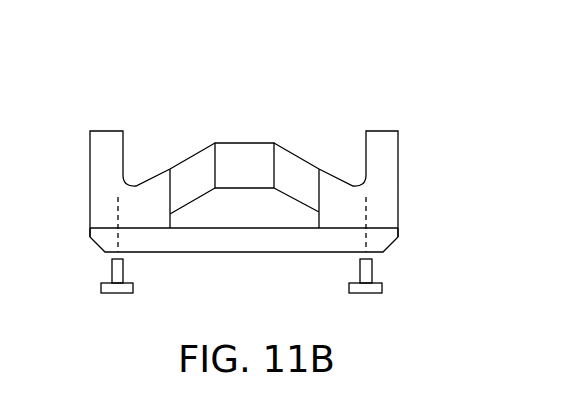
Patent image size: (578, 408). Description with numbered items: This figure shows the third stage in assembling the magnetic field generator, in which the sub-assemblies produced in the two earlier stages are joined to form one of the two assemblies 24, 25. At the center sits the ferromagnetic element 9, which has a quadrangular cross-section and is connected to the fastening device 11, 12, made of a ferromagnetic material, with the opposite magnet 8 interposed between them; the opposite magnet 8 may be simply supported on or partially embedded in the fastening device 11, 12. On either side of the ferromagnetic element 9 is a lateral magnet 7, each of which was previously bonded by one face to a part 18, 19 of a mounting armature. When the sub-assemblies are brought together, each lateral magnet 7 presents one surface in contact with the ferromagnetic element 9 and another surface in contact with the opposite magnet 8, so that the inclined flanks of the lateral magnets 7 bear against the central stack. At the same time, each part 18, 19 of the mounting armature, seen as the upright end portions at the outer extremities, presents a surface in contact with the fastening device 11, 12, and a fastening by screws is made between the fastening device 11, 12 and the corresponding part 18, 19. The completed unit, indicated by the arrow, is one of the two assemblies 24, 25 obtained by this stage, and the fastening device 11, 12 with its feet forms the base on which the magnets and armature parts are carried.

The lateral magnet 7 is at (205, 160).
The opposite magnet 8 is at (262, 218).
The ferromagnetic element 9 is at (248, 152).
The fastening device 11 is at (244, 272).
The fastening device 12 is at (213, 240).
The part of mounting armature 18 is at (245, 168).
The part of mounting armature 19 is at (115, 180).
The assembly 24 is at (290, 176).
The assembly 25 is at (475, 133).